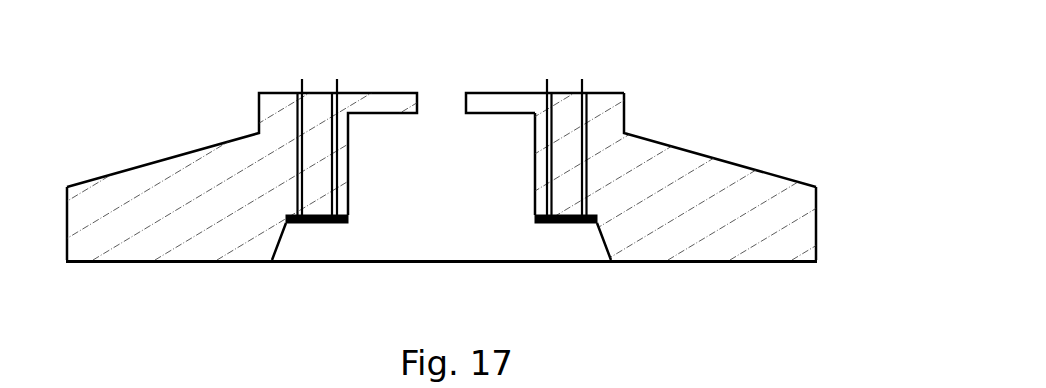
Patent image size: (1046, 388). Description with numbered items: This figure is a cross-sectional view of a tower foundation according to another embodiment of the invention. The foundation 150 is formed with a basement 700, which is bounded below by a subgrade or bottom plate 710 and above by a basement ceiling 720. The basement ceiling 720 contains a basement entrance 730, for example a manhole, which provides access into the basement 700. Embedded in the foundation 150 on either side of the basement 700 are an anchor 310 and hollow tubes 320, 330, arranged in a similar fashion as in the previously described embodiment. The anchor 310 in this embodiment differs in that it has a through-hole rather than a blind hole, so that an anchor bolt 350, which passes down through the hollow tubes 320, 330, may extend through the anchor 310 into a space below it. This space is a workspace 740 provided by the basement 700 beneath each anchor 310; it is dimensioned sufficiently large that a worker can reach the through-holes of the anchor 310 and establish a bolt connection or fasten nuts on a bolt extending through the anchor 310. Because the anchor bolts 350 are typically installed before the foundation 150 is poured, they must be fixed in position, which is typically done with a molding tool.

The foundation 150 is at (702, 177).
The anchor 310 is at (590, 216).
The hollow tube 320 is at (587, 118).
The hollow tube 330 is at (341, 117).
The anchor bolt 350 is at (302, 86).
The basement 700 is at (458, 202).
The bottom plate 710 is at (436, 262).
The basement ceiling 720 is at (490, 103).
The basement entrance 730 is at (446, 85).
The workspace 740 is at (309, 253).